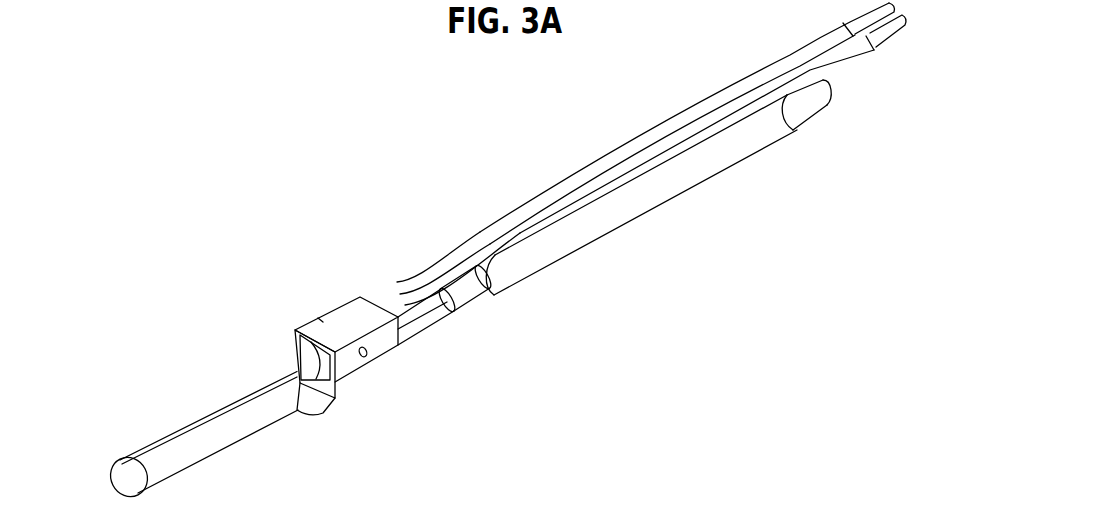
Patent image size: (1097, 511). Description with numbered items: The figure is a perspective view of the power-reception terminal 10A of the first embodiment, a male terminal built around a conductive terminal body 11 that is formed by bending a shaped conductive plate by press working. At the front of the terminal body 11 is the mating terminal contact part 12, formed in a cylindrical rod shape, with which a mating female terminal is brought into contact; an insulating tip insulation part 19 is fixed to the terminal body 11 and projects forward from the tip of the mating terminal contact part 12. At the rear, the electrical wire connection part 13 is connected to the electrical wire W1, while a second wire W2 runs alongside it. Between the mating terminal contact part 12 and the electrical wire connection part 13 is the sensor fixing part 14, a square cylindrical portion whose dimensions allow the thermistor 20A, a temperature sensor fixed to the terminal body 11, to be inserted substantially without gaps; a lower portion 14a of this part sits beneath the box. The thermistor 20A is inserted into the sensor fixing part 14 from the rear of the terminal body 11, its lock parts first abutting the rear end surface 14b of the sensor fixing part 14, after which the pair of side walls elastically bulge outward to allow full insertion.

The power-reception terminal 10A is at (280, 241).
The terminal body 11 is at (215, 410).
The mating terminal contact part 12 is at (183, 436).
The tip insulation part 19 is at (124, 474).
The thermistor 20A is at (294, 350).
The sensor fixing part 14 is at (354, 312).
The lower crimp portion 14a is at (323, 413).
The rear end surface 14b is at (400, 279).
The electrical wire connection part 13 is at (474, 297).
The electrical wire W1 is at (687, 170).
The electric wires W2 is at (650, 165).